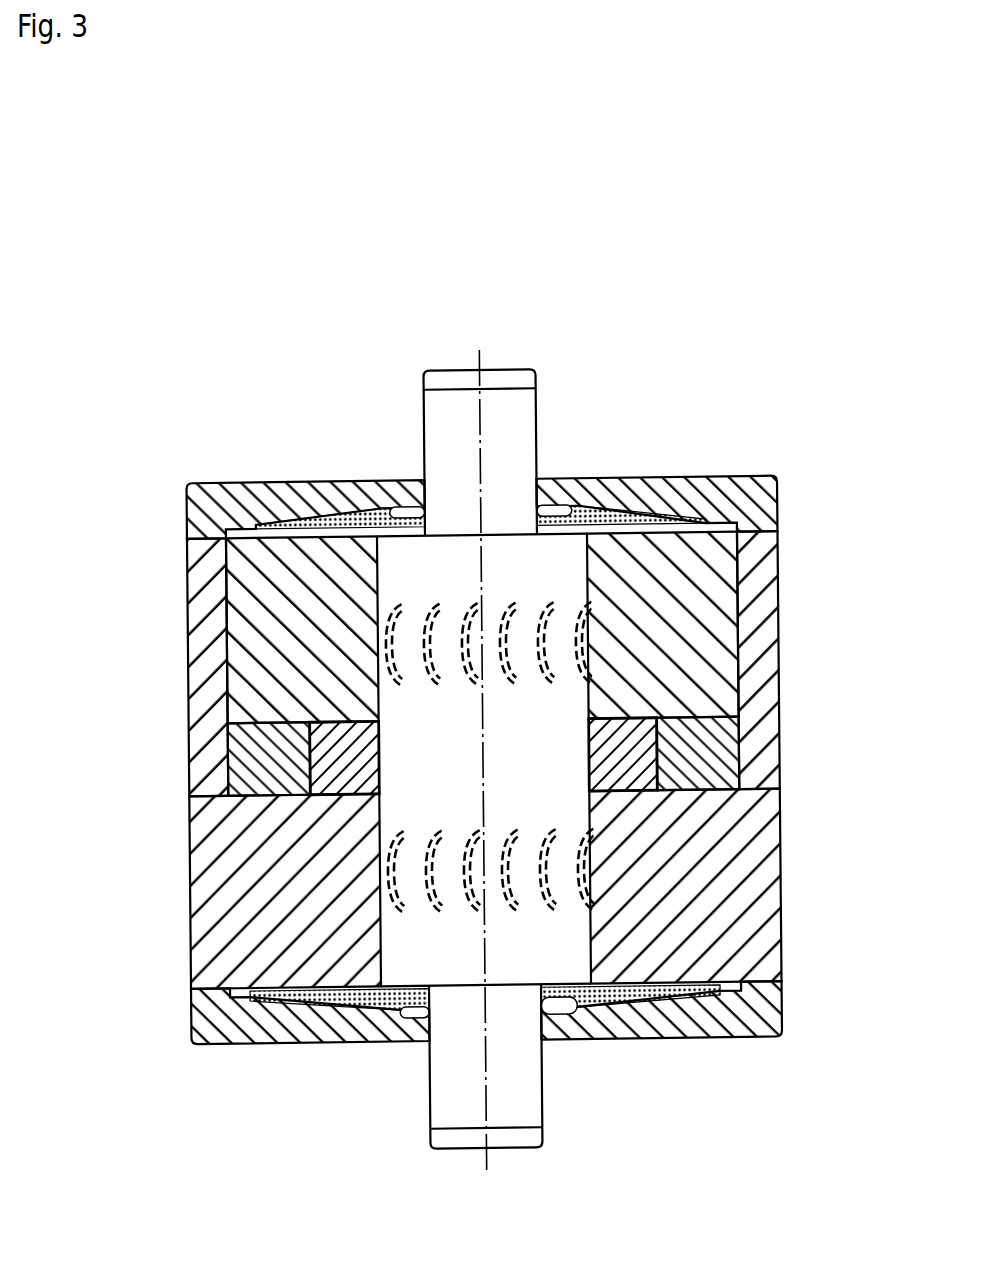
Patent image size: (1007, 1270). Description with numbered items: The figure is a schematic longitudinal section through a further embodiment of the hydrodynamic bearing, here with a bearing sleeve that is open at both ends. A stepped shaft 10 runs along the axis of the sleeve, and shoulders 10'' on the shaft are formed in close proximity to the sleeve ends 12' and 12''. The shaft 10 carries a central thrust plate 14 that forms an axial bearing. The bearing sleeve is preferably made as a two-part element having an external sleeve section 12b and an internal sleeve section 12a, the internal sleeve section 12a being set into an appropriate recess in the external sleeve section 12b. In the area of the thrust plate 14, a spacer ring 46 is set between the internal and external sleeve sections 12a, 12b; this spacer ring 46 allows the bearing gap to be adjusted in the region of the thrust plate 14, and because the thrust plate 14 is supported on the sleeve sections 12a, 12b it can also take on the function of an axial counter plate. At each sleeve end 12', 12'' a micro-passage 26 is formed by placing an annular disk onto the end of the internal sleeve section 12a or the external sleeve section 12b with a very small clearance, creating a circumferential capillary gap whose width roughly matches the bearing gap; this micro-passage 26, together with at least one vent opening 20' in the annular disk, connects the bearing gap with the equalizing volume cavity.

The shaft 10 is at (516, 696).
The shoulders 10'' is at (626, 751).
The end of the bearing sleeve 12' is at (263, 537).
The sleeve end 12'' is at (445, 984).
The internal sleeve section 12a is at (307, 691).
The external sleeve section 12b is at (746, 841).
The thrust plate 14 is at (671, 720).
The vent opening 20' is at (655, 389).
The micro-passage 26 is at (634, 507).
The spacer ring 46 is at (300, 760).